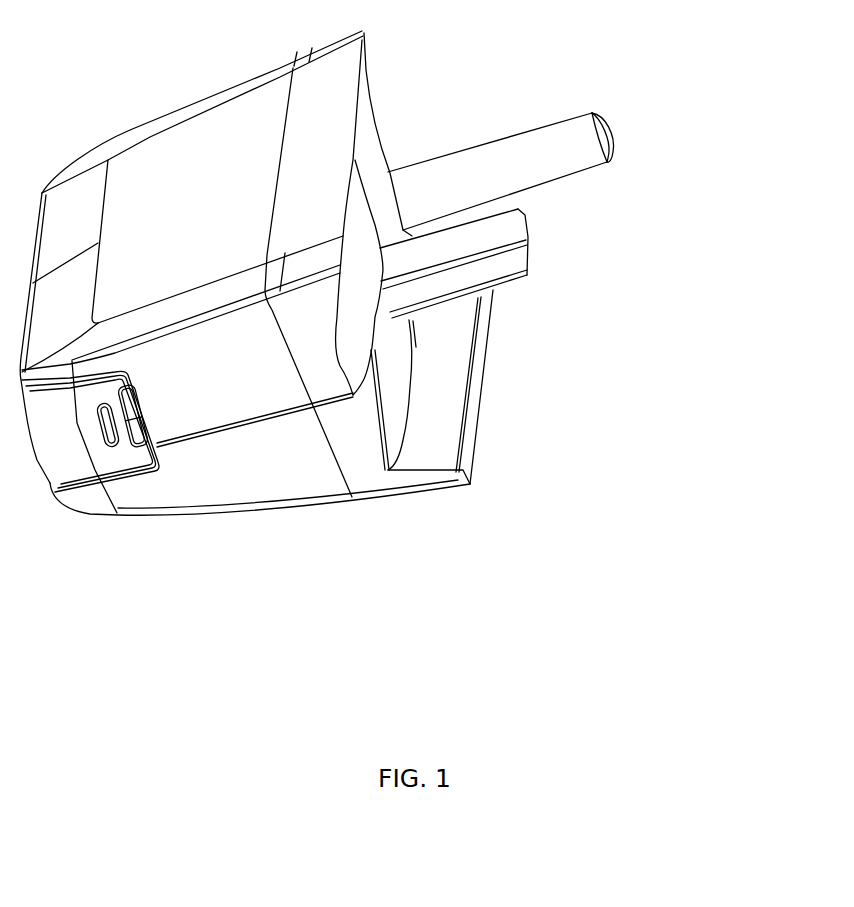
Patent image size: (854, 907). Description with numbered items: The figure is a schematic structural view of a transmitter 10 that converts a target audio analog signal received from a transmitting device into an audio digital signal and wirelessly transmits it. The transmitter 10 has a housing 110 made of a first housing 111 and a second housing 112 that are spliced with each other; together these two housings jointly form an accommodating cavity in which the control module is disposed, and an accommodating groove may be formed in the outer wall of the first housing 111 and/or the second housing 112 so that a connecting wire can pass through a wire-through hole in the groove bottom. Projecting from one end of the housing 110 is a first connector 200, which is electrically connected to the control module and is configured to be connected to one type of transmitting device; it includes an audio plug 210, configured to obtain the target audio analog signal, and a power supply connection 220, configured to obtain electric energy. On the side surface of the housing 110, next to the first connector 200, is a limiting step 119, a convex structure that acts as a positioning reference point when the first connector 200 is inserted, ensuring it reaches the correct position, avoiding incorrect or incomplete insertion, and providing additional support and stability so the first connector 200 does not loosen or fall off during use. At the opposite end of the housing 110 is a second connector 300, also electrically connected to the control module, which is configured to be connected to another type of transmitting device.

The transmitter 10 is at (97, 61).
The housing 110 is at (296, 334).
The first housing 111 is at (202, 408).
The second housing 112 is at (290, 482).
The limiting step 119 is at (457, 362).
The first connector 200 is at (554, 221).
The audio plug 210 is at (527, 165).
The power supply connection 220 is at (513, 237).
The second connector 300 is at (77, 437).